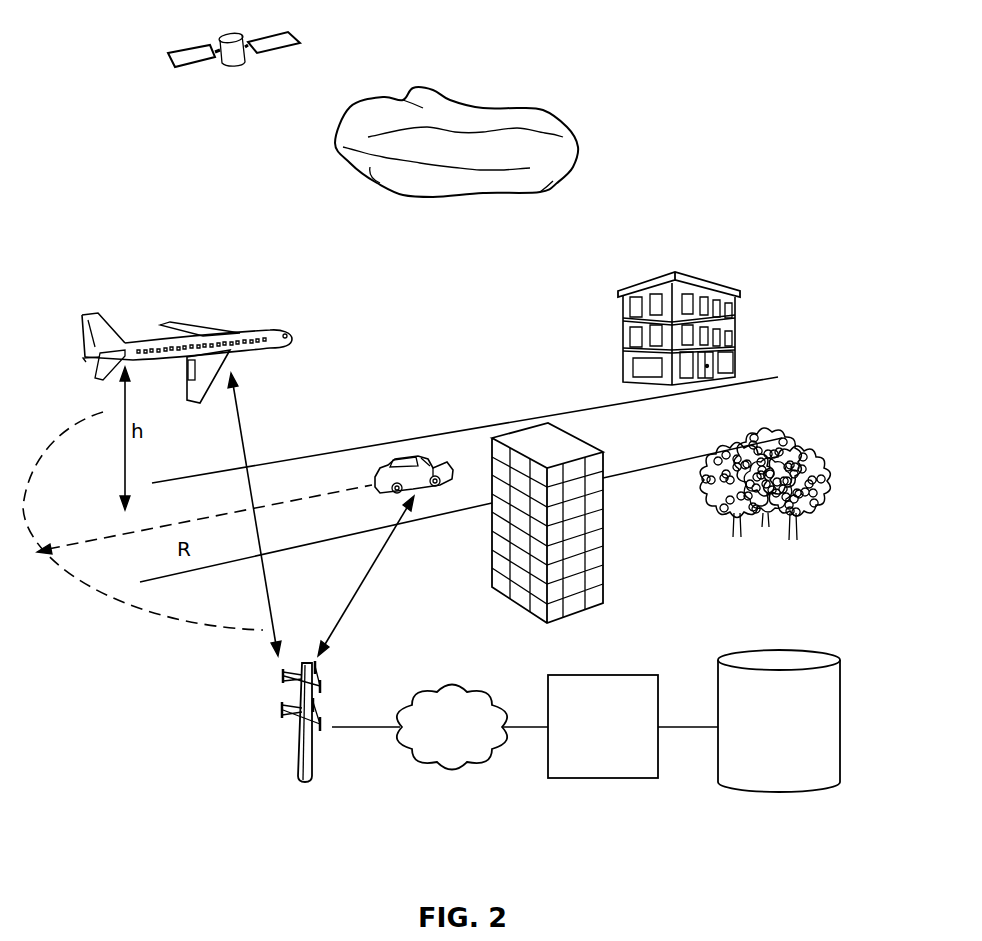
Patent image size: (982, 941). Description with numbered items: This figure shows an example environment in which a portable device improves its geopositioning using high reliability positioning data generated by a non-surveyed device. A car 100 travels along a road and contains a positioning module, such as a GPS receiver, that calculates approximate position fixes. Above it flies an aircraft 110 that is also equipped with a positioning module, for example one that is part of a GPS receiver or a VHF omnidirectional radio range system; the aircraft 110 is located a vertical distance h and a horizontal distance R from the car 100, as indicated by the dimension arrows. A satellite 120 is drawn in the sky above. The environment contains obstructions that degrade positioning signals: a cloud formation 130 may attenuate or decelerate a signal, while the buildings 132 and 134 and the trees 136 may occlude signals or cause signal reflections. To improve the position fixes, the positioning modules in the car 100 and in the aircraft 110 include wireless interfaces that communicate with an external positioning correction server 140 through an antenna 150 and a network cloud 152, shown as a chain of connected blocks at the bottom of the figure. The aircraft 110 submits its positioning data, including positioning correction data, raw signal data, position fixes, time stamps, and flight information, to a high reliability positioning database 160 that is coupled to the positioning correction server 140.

The car 100 is at (407, 458).
The aircraft 110 is at (227, 332).
The satellite 120 is at (267, 32).
The cloud formation 130 is at (543, 108).
The building 132 is at (607, 517).
The building 134 is at (707, 282).
The trees 136 is at (805, 470).
The positioning correction server 140 is at (638, 675).
The antenna 150 is at (305, 783).
The network cloud 152 is at (455, 687).
The high reliability positioning database 160 is at (813, 652).